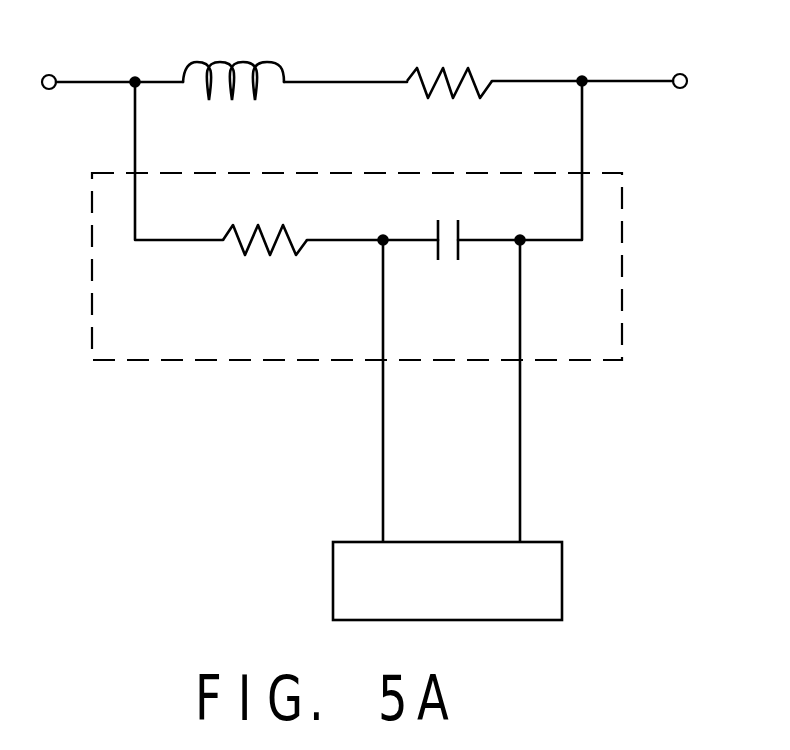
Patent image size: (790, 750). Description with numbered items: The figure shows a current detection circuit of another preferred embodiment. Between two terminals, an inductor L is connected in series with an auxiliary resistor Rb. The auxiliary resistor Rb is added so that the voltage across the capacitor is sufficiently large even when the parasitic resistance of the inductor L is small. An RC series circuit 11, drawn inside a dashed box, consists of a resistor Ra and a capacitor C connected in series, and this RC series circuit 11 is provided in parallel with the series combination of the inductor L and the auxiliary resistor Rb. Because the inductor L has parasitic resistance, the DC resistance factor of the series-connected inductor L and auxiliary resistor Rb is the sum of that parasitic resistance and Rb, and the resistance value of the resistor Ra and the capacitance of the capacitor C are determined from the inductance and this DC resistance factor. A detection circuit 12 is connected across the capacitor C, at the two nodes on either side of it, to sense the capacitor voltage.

The RC series circuit 11 is at (399, 220).
The detection circuit 12 is at (562, 568).
The inductor L is at (233, 56).
The auxiliary resistor Rb is at (449, 54).
The resistor Ra is at (265, 264).
The capacitor C is at (445, 263).